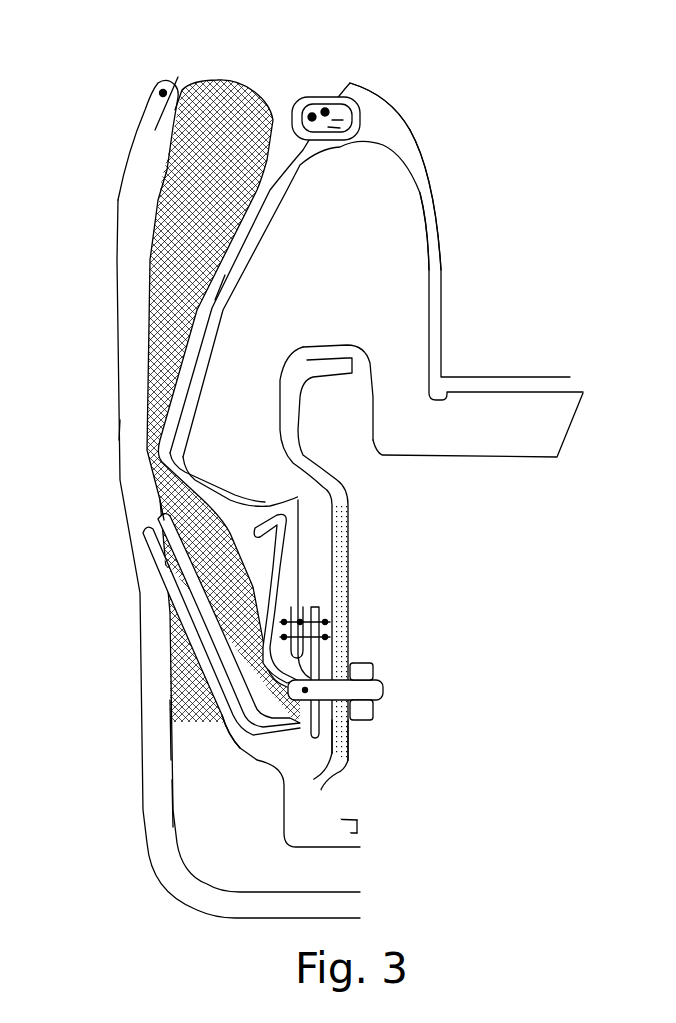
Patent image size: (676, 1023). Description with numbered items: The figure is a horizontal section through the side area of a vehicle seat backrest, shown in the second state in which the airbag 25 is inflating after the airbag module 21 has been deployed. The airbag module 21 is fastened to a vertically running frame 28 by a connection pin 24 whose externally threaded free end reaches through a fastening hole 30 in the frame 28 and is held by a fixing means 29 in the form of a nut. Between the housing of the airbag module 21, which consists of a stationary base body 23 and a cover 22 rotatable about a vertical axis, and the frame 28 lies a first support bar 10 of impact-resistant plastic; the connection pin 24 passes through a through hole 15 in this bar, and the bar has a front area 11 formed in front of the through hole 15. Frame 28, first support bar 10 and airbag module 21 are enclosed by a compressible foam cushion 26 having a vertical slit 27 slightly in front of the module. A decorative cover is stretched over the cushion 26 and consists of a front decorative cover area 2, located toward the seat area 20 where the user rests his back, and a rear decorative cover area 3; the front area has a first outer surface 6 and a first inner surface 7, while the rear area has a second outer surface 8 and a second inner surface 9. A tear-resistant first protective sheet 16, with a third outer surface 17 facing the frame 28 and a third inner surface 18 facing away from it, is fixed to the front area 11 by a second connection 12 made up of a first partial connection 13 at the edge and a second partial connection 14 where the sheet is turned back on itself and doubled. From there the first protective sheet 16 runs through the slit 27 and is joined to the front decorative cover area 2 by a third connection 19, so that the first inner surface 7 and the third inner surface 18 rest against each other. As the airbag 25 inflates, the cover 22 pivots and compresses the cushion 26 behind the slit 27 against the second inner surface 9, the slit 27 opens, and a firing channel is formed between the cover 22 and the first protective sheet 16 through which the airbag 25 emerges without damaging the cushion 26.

The front decorative cover area 2 is at (441, 228).
The rear decorative cover area 3 is at (116, 420).
The first outer surface 6 is at (422, 163).
The first inner surface 7 is at (397, 128).
The second outer surface 8 is at (116, 370).
The second inner surface 9 is at (128, 326).
The first support bar 10 is at (205, 787).
The front area 11 is at (336, 648).
The second connection 12 is at (177, 650).
The first partial connection 13 is at (336, 606).
The second partial connection 14 is at (336, 626).
The through hole 15 is at (171, 737).
The first protective sheet 16 is at (240, 222).
The third outer surface 17 is at (220, 270).
The third inner surface 18 is at (352, 515).
The third connection 19 is at (337, 132).
The seat area 20 is at (531, 329).
The airbag module 21 is at (140, 545).
The cover 22 is at (170, 610).
The base body 23 is at (352, 571).
The connection pin 24 is at (384, 692).
The airbag 25 is at (228, 95).
The cushion 26 is at (385, 283).
The slit 27 is at (148, 507).
The frame 28 is at (358, 828).
The fixing means 29 is at (378, 716).
The fastening hole 30 is at (356, 732).